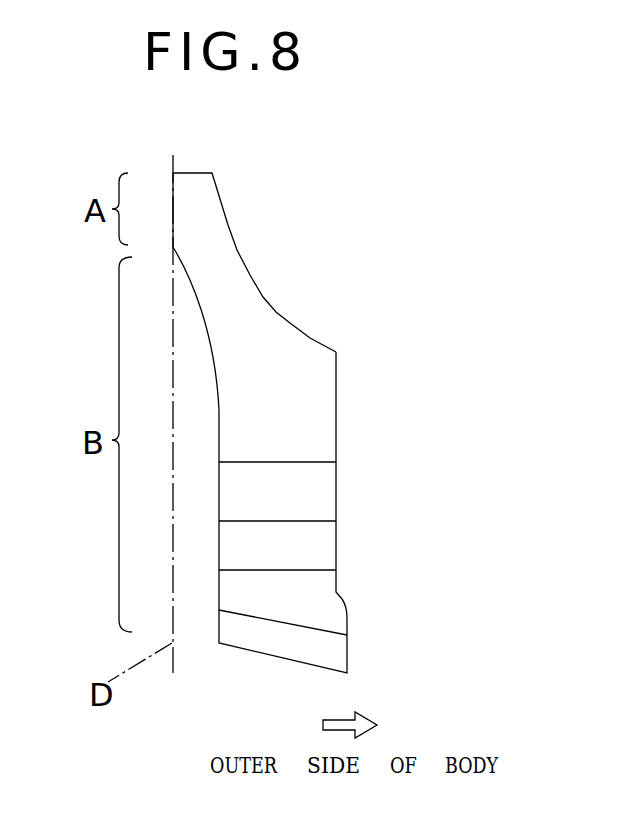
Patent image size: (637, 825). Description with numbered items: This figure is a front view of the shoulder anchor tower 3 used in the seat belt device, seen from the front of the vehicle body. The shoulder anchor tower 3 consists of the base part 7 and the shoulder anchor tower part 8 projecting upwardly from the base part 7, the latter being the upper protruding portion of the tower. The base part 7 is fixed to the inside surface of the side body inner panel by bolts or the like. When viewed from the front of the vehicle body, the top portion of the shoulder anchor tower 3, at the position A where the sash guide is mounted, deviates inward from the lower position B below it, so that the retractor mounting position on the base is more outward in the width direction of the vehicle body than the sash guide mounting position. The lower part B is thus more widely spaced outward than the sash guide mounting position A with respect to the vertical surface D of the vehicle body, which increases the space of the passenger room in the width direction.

The shoulder anchor tower 3 is at (313, 315).
The base part 7 is at (326, 489).
The shoulder anchor tower part 8 is at (225, 247).